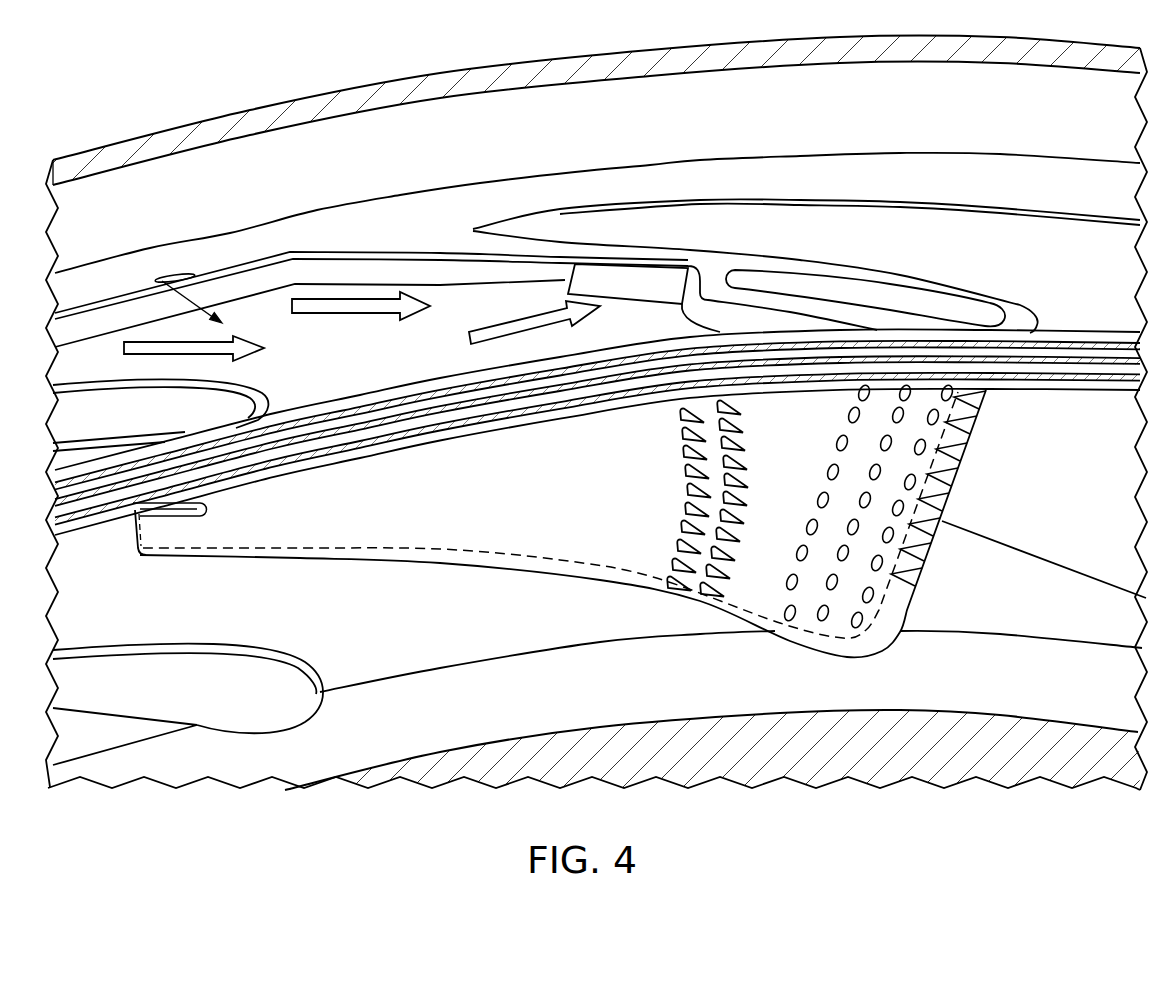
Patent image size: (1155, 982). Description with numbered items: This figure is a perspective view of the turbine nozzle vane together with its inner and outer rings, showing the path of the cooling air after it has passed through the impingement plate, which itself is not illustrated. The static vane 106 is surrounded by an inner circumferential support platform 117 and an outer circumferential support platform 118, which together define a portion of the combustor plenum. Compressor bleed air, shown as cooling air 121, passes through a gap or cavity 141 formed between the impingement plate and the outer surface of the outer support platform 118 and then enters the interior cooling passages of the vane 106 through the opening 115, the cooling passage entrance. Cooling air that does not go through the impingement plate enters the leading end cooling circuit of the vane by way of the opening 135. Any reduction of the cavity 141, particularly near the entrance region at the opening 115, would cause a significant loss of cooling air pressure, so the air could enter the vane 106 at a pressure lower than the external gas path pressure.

The static vane 106 is at (958, 468).
The opening 115 is at (622, 278).
The inner circumferential support platform 117 is at (434, 630).
The outer circumferential support platform 118 is at (400, 373).
The cooling air 121 is at (253, 352).
The opening 135 is at (867, 294).
The cavity 141 is at (193, 278).